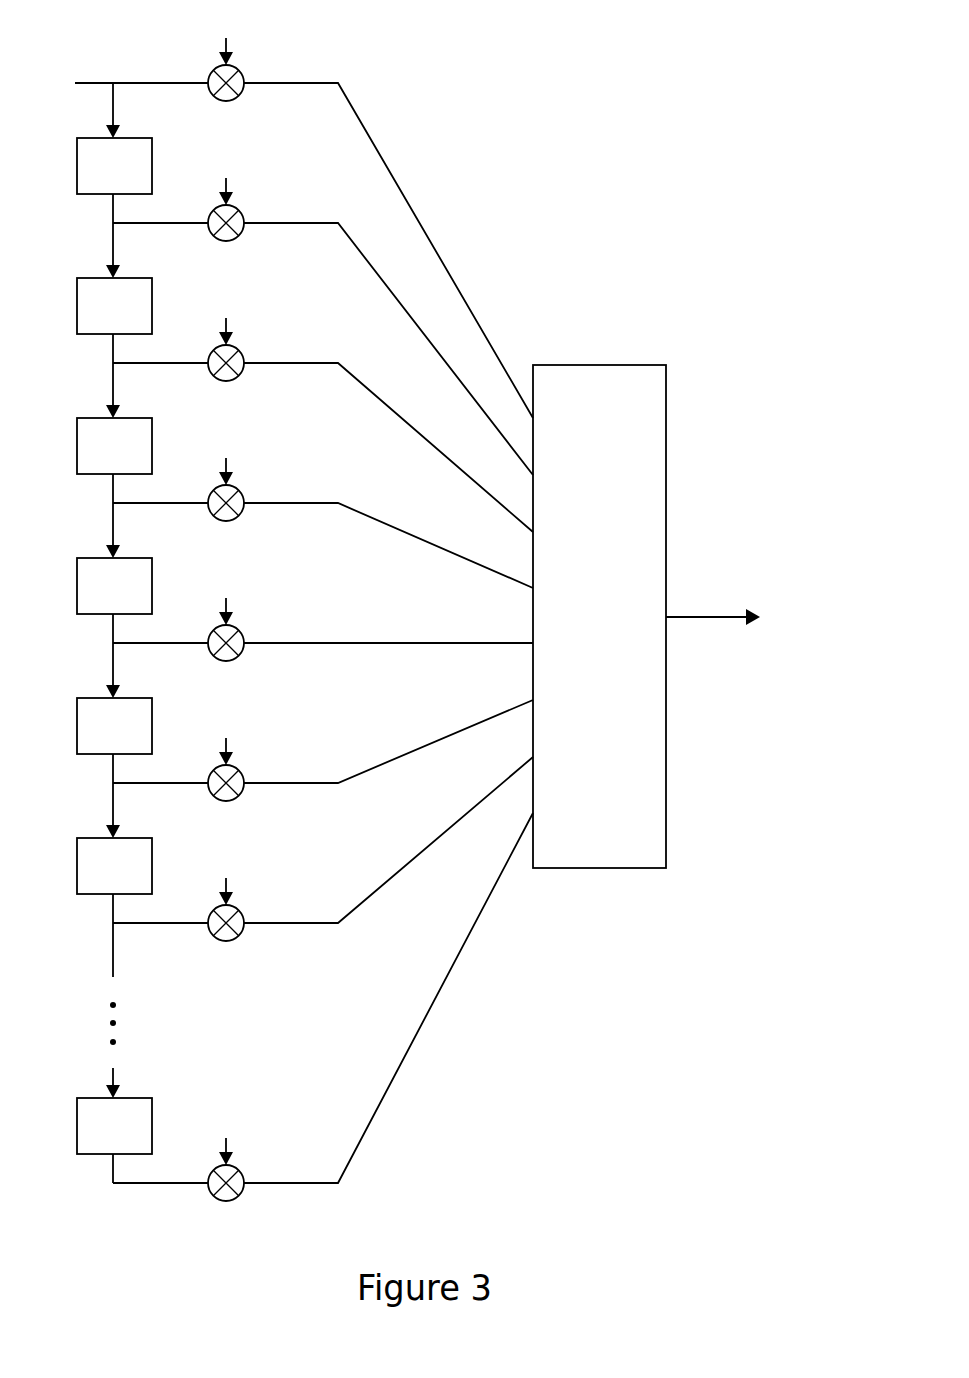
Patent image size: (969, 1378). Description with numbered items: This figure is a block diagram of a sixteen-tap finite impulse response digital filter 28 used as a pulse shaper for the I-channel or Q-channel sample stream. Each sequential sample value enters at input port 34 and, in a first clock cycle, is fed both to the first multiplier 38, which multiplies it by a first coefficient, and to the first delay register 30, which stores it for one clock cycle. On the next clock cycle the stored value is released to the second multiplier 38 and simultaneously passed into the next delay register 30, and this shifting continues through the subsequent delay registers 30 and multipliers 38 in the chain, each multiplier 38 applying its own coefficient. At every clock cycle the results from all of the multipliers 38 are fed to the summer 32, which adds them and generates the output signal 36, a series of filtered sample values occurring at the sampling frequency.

The FIR filter 28 is at (722, 50).
The delay register 30 is at (114, 633).
The summer 32 is at (666, 781).
The input port 34 is at (96, 83).
The output signal 36 is at (705, 617).
The multiplier 38 is at (268, 1210).